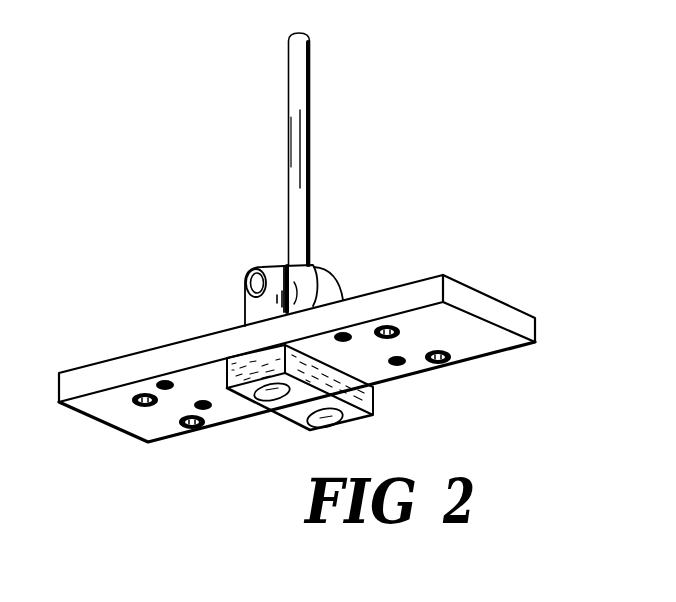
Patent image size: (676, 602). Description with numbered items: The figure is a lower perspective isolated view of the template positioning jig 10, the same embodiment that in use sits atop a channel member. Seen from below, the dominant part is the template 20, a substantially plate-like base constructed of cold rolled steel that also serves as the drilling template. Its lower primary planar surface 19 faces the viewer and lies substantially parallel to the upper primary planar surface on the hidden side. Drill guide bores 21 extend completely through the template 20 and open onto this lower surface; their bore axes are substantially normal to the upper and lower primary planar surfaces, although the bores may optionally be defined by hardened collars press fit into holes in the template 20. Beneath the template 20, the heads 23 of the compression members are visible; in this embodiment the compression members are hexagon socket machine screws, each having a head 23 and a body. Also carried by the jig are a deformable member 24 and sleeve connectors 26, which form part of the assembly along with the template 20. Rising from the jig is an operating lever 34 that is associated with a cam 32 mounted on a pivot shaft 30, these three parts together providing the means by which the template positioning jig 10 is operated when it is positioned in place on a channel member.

The template positioning jig 10 is at (434, 161).
The lower primary planar surface 19 is at (508, 343).
The template 20 is at (445, 391).
The drill guide bores 21 is at (144, 407).
The head 23 is at (195, 370).
The deformable member 24 is at (376, 398).
The sleeve connectors 26 is at (247, 315).
The pivot shaft 30 is at (247, 283).
The cam 32 is at (327, 282).
The operating lever 34 is at (298, 60).